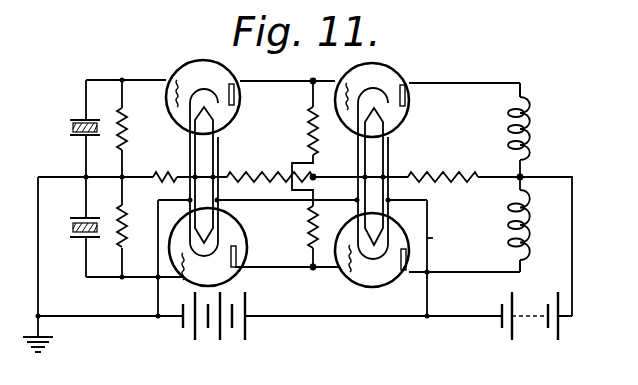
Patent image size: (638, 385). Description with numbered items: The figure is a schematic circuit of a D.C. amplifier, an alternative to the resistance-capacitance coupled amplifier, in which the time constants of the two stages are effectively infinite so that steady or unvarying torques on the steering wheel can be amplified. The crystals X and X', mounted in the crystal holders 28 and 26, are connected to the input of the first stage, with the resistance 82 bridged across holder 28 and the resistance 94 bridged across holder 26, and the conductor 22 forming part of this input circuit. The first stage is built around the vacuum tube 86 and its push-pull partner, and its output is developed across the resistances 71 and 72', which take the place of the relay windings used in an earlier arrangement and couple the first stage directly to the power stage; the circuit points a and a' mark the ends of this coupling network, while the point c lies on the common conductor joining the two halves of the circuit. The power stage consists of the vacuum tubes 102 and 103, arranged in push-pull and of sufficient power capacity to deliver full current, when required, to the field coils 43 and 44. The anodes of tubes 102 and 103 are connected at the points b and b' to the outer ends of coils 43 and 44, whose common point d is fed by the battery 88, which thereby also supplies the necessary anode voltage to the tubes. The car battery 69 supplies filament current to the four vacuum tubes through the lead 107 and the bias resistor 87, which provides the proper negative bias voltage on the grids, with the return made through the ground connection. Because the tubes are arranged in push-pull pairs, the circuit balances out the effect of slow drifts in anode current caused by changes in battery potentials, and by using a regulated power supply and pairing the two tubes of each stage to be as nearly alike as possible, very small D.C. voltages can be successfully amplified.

The vacuum tube 86 is at (203, 86).
The vacuum tube 102 is at (372, 90).
The vacuum tube 103 is at (372, 259).
The crystal holder 28 is at (83, 117).
The crystal holder 26 is at (83, 238).
The conductor 22 is at (95, 167).
The resistance 82 is at (132, 129).
The resistance 94 is at (131, 226).
The bias resistor 87 is at (165, 168).
The resistance 71 is at (305, 131).
The resistance 72' is at (304, 227).
The field coil 43 is at (529, 128).
The field coil 44 is at (529, 225).
The lead 107 is at (443, 248).
The car battery 69 is at (214, 325).
The battery 88 is at (530, 319).
The crystal X is at (54, 128).
The crystal X' is at (59, 231).
The circuit point a is at (311, 74).
The circuit point a' is at (314, 276).
The circuit point b is at (527, 84).
The circuit point b' is at (529, 269).
The circuit point c is at (318, 170).
The circuit point d is at (526, 169).